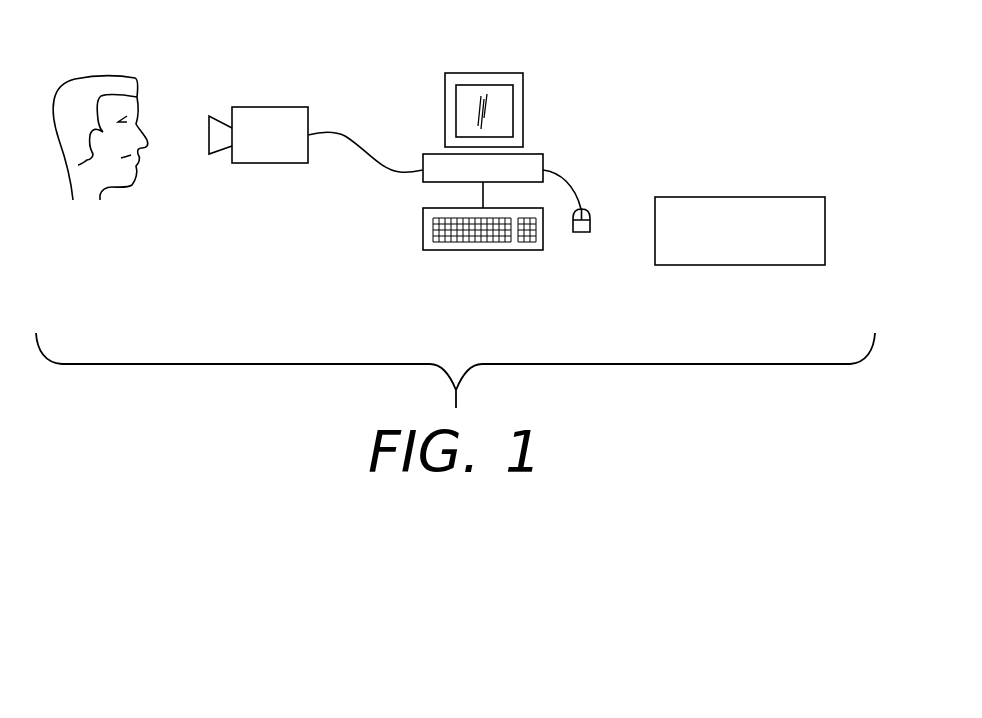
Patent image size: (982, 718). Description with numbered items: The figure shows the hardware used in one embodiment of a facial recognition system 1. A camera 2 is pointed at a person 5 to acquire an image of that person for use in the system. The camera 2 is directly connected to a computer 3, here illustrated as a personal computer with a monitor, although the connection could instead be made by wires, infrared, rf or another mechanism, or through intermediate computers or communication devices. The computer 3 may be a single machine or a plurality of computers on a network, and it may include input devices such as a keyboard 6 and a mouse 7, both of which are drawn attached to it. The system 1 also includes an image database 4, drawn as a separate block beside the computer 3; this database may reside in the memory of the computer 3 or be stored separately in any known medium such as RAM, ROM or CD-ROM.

The facial recognition system 1 is at (712, 57).
The camera 2 is at (265, 107).
The computer 3 is at (523, 73).
The image database 4 is at (825, 197).
The person 5 is at (135, 78).
The keyboard 6 is at (433, 250).
The mouse 7 is at (582, 232).